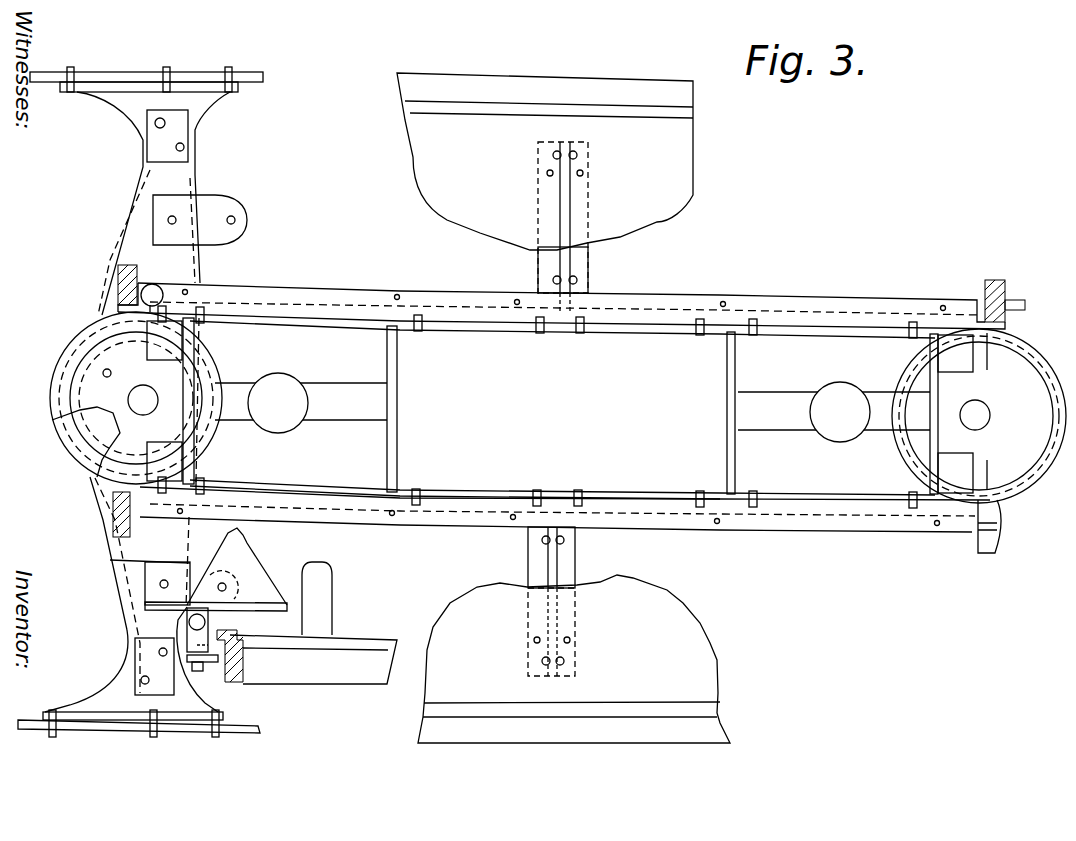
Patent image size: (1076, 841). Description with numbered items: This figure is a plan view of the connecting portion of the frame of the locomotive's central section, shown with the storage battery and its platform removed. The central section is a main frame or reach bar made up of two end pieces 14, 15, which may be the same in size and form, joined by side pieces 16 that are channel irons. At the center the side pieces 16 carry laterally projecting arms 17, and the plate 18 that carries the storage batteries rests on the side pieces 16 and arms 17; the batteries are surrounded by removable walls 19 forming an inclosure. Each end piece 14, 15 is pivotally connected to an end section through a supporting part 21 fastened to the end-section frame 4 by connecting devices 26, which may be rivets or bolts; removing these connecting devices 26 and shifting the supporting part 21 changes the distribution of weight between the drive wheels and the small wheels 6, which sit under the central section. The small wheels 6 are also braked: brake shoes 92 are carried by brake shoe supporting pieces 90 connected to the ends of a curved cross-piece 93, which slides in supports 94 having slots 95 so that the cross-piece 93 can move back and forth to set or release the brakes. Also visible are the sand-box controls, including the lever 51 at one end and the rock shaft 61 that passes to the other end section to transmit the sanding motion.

The frame 4 is at (125, 72).
The wheel 6 is at (313, 623).
The end piece 14 is at (322, 350).
The end piece 15 is at (250, 403).
The side piece 16 is at (498, 304).
The laterally projecting arm 17 is at (580, 264).
The plate 18 is at (608, 585).
The removable wall 19 is at (488, 108).
The supporting part 21 is at (137, 230).
The connecting device 26 is at (70, 70).
The lever 51 is at (46, 398).
The rock shaft 61 is at (985, 300).
The brake shoe supporting piece 90 is at (213, 662).
The brake shoe 92 is at (248, 665).
The curved cross-piece 93 is at (248, 542).
The support 94 is at (173, 566).
The slot 95 is at (263, 600).